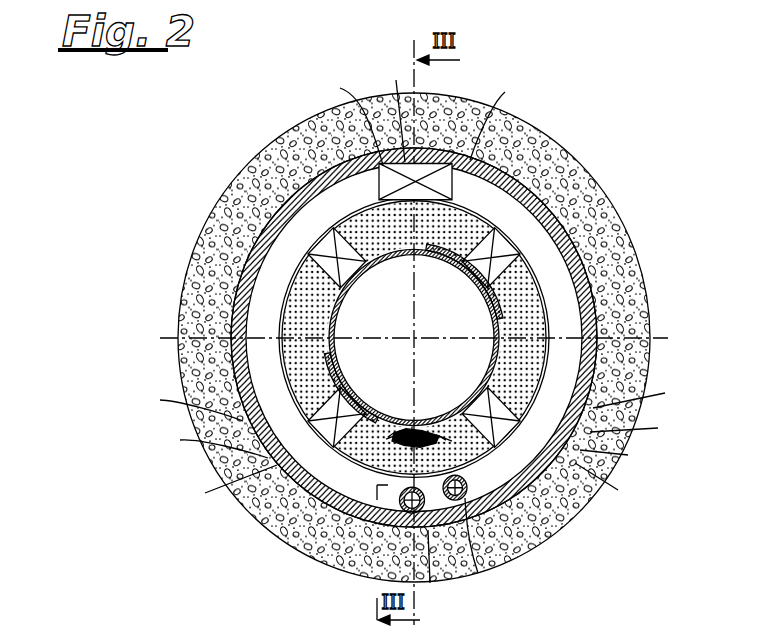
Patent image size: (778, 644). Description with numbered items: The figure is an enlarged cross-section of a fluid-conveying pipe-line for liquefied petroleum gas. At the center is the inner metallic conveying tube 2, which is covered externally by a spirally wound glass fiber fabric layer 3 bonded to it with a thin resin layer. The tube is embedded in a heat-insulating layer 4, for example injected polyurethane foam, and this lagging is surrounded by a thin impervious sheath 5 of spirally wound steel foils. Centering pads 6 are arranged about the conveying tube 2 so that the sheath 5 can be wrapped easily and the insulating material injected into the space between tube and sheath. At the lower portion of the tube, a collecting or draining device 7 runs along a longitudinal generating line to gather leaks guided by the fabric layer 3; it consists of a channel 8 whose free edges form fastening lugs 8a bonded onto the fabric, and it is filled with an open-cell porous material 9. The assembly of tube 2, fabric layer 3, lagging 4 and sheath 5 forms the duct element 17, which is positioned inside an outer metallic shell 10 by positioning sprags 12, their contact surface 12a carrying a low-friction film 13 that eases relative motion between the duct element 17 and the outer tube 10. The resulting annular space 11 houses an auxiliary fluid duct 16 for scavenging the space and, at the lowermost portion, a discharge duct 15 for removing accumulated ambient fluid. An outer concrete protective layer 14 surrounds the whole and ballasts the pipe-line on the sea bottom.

The inner metallic conveying tube 2 is at (498, 316).
The fabric layer 3 is at (434, 250).
The heat-insulating layer 4 is at (520, 320).
The impervious sheath 5 is at (548, 352).
The centering pads 6 is at (332, 250).
The collecting or draining device 7 is at (372, 466).
The casing or channel 8 is at (467, 490).
The fastening lugs 8a is at (387, 410).
The porous material 9 is at (407, 418).
The outer metallic shell 10 is at (587, 238).
The annular space 11 is at (590, 268).
The positioning members or sprags 12 is at (403, 273).
The contact surface 12a is at (409, 290).
The low-friction film 13 is at (407, 248).
The outer protective layer 14 is at (644, 394).
The discharge duct 15 is at (430, 583).
The auxiliary fluid duct 16 is at (478, 573).
The duct element 17 is at (282, 294).